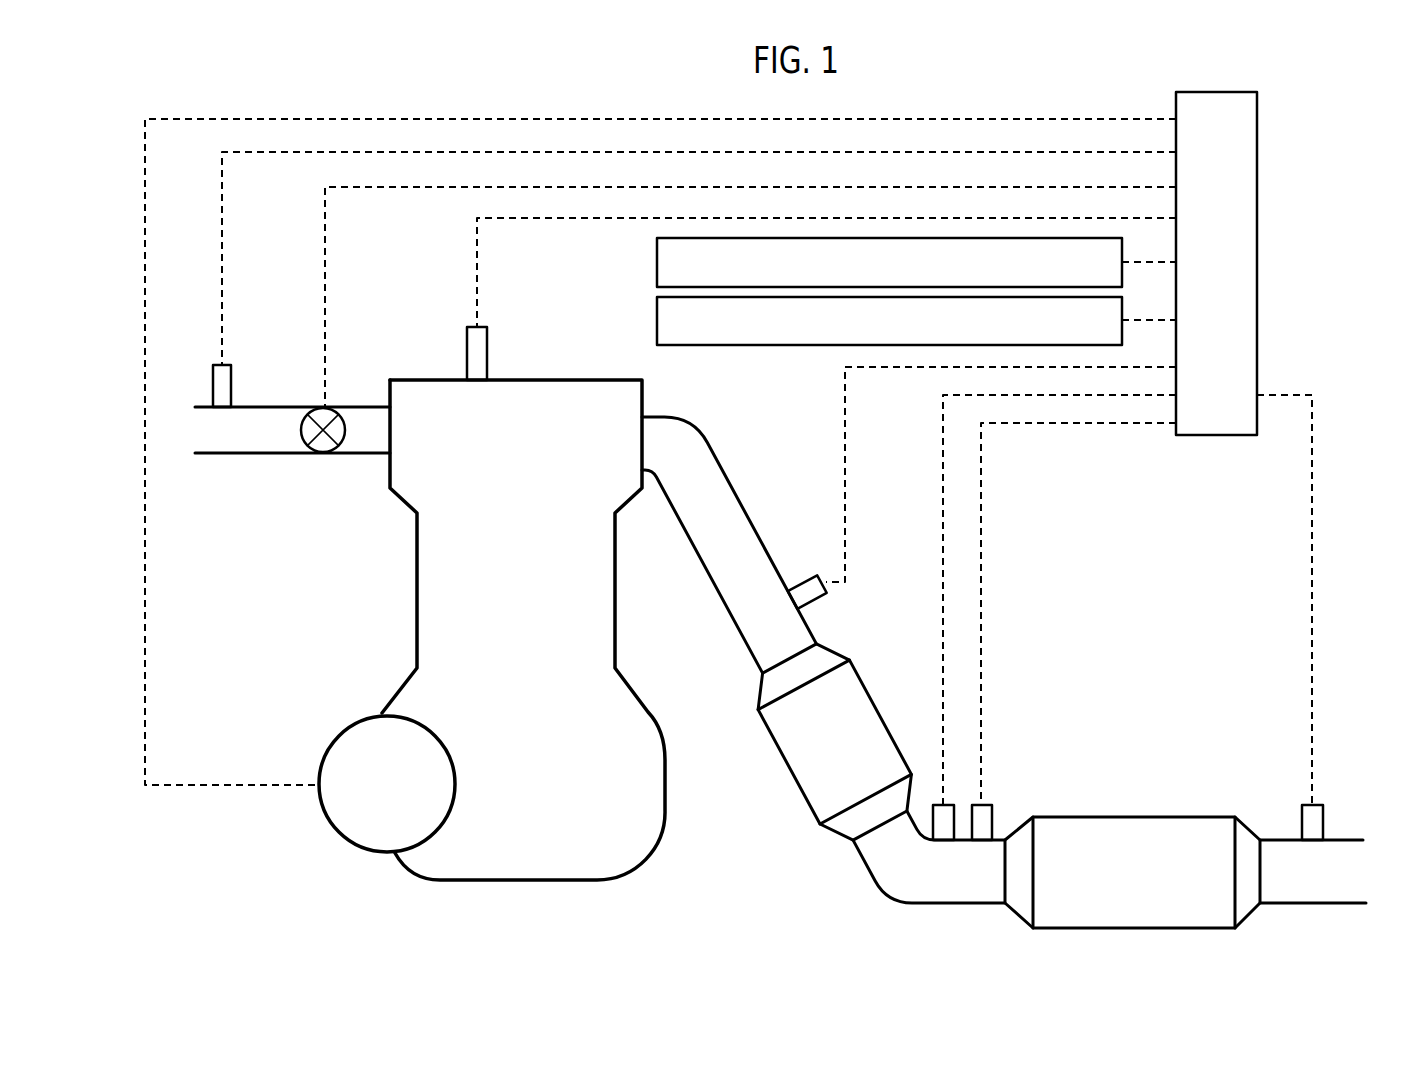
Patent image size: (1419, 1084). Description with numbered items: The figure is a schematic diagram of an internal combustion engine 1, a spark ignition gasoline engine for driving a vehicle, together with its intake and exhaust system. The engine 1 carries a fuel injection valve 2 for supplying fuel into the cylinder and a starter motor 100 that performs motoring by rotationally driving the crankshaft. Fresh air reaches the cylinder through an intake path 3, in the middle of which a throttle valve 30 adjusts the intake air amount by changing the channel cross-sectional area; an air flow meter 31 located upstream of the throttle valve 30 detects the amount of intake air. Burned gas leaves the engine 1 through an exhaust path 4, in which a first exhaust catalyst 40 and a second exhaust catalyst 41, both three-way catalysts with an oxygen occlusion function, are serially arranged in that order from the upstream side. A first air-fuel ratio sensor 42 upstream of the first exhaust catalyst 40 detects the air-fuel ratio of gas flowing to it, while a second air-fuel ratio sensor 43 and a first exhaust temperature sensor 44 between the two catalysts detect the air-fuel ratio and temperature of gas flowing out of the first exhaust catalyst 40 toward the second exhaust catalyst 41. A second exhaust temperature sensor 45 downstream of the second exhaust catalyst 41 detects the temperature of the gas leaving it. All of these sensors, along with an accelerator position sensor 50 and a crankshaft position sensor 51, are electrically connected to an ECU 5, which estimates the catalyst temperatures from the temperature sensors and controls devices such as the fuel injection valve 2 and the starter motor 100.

The internal combustion engine 1 is at (530, 880).
The starter motor 100 is at (350, 725).
The fuel injection valve 2 is at (488, 358).
The intake path 3 is at (280, 453).
The throttle valve 30 is at (338, 409).
The air flow meter 31 is at (215, 362).
The exhaust path 4 is at (722, 467).
The first exhaust catalyst 40 is at (800, 793).
The second exhaust catalyst 41 is at (1150, 815).
The first air-fuel ratio sensor 42 is at (808, 575).
The second air-fuel ratio sensor 43 is at (992, 815).
The first exhaust temperature sensor 44 is at (940, 800).
The second exhaust temperature sensor 45 is at (1323, 815).
The electronic control unit (ECU) 5 is at (1257, 253).
The accelerator position sensor 50 is at (657, 262).
The crankshaft position sensor 51 is at (657, 318).